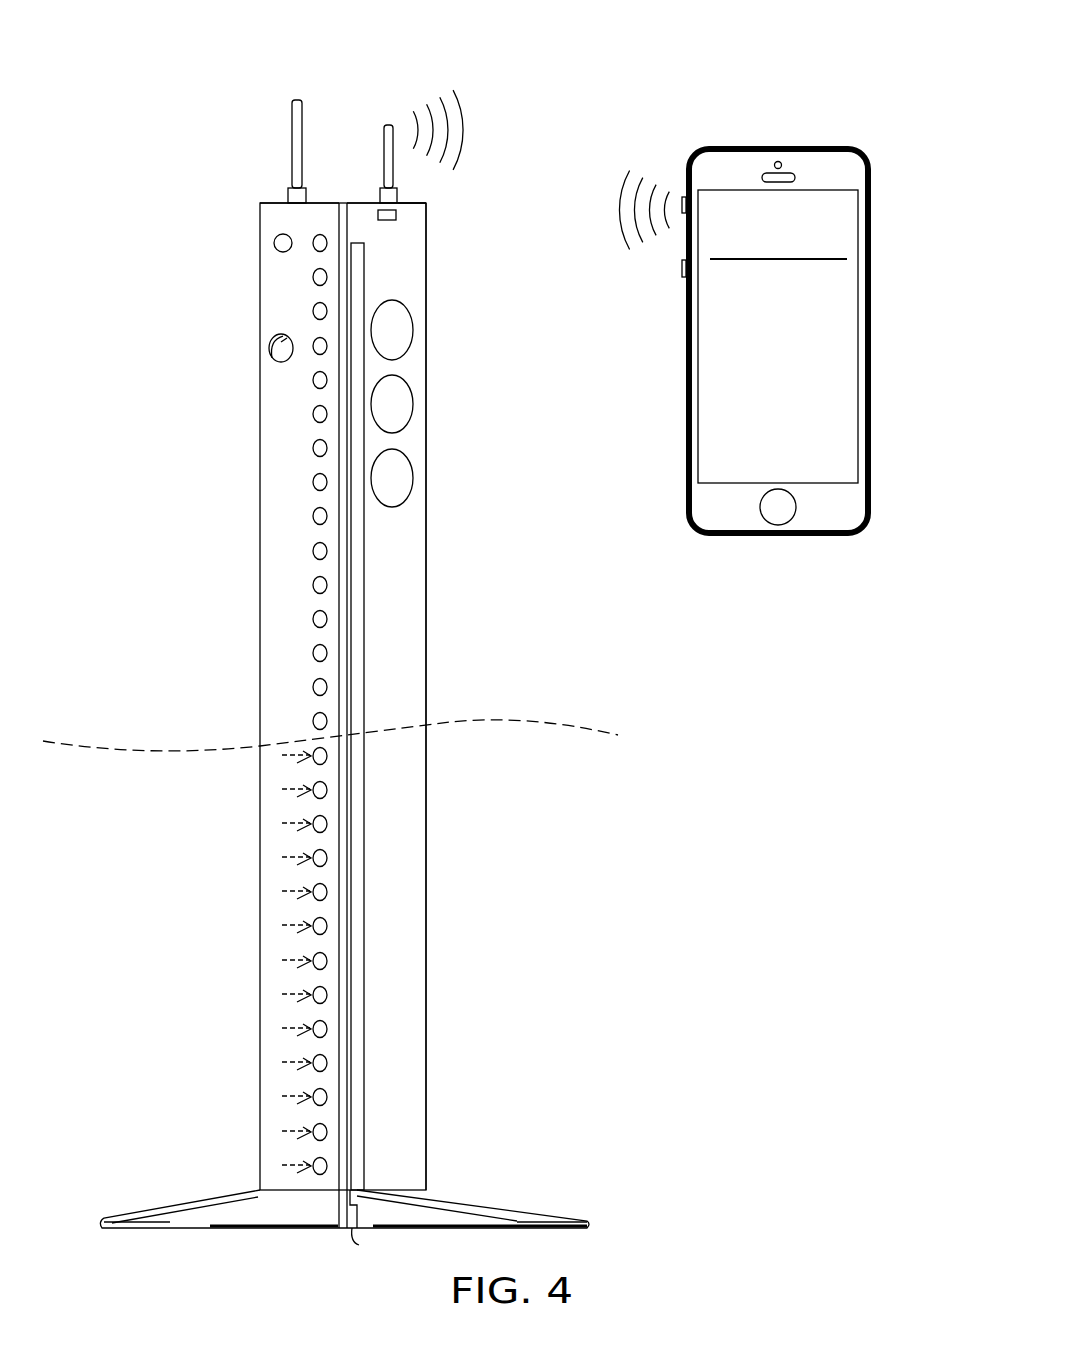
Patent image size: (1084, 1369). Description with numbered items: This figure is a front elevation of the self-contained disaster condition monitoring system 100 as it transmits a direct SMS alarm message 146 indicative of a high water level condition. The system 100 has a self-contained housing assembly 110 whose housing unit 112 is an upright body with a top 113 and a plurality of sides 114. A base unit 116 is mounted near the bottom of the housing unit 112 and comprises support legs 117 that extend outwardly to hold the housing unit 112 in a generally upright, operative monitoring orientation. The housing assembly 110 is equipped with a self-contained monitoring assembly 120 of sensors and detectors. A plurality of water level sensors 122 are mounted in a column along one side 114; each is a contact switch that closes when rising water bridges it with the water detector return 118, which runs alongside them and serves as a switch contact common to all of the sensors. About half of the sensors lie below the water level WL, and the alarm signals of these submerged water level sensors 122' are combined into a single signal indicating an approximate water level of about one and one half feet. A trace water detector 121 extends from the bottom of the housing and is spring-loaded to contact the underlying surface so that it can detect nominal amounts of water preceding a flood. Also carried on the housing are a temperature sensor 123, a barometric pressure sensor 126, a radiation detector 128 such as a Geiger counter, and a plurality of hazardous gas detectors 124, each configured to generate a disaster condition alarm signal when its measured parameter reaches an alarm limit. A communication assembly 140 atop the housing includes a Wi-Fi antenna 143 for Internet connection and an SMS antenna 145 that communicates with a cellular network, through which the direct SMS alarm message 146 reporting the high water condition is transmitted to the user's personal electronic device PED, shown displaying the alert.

The self-contained disaster condition monitoring system 100 is at (602, 106).
The self-contained housing assembly 110 is at (456, 554).
The housing unit 112 is at (426, 620).
The sides 114 is at (394, 684).
The top 113 is at (411, 203).
The base unit 116 is at (547, 1190).
The support legs 117 is at (187, 1232).
The water detector return 118 is at (356, 850).
The self-contained monitoring assembly 120 is at (183, 421).
The trace water detector 121 is at (353, 1238).
The water level sensors 122 is at (258, 482).
The submerged water level sensors 122' is at (386, 961).
The temperature sensor 123 is at (396, 217).
The hazardous gas detectors 124 is at (403, 328).
The barometric pressure sensor 126 is at (278, 244).
The radiation detector 128 is at (268, 348).
The communication assembly 140 is at (338, 117).
The Wi-Fi antenna 143 is at (291, 152).
The SMS antenna 145 is at (383, 153).
The direct SMS alarm message 146 is at (842, 213).
The water level WL is at (553, 720).
The personal electronic device PED is at (843, 538).